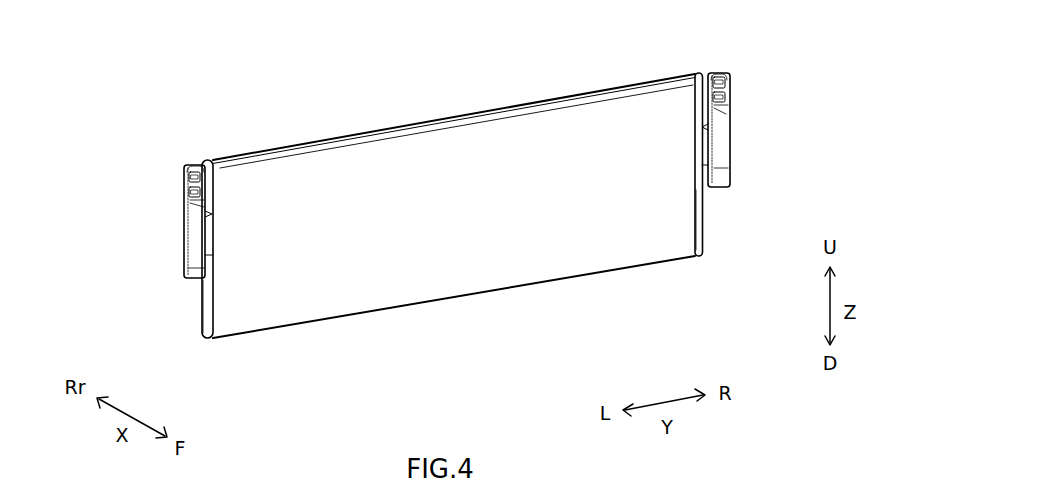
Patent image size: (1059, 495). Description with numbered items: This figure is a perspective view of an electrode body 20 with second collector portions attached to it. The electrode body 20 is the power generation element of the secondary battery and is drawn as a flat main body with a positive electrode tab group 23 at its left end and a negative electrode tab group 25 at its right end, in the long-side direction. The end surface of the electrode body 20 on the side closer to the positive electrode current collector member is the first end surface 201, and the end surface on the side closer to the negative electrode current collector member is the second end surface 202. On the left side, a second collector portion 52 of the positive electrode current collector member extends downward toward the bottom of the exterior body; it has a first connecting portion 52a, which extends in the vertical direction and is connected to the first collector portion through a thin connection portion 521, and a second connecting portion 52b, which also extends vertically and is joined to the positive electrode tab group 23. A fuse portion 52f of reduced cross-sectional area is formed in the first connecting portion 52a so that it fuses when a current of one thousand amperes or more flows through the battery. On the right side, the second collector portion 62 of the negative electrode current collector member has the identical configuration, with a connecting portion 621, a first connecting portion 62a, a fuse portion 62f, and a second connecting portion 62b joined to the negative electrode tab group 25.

The electrode body 20 is at (464, 142).
The positive electrode tab group 23 is at (211, 246).
The negative electrode tab group 25 is at (705, 168).
The first end surface 201 is at (208, 318).
The second end surface 202 is at (702, 237).
The second collector portion 52 is at (153, 198).
The first connecting portion 52a is at (198, 166).
The second connecting portion 52b is at (158, 281).
The fuse portion 52f is at (196, 200).
The connection portion 521 is at (190, 180).
The second collector portion 62 is at (764, 102).
The first connecting portion 62a is at (719, 73).
The second connecting portion 62b is at (725, 166).
The fuse portion 62f is at (722, 105).
The connecting portion 621 is at (722, 85).